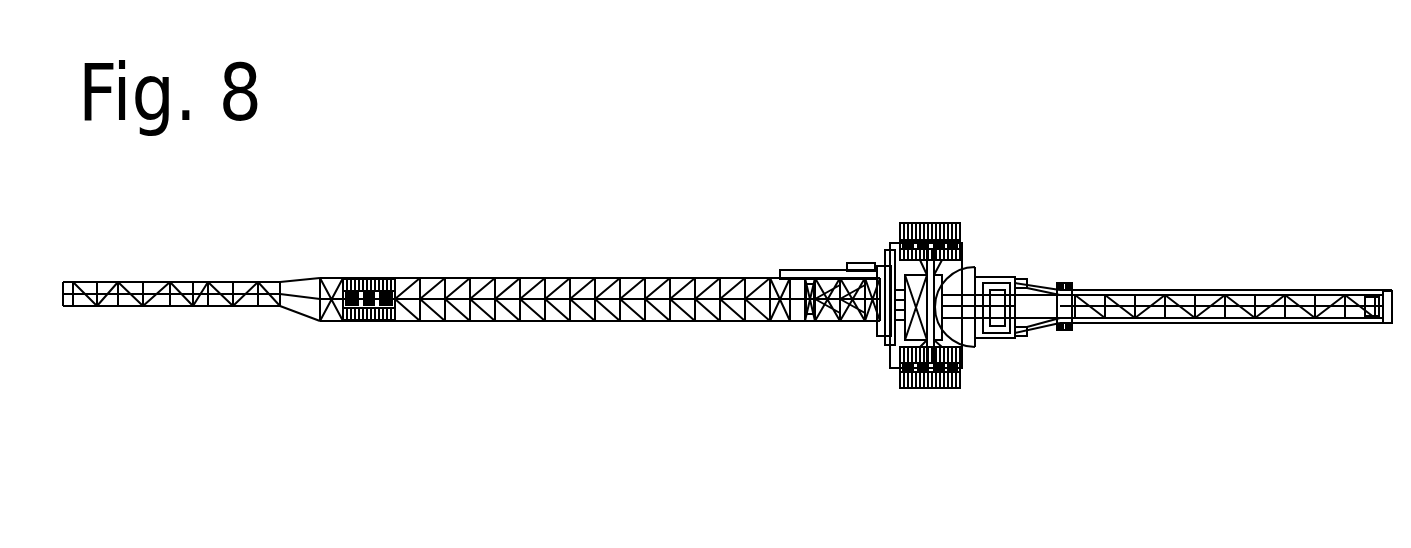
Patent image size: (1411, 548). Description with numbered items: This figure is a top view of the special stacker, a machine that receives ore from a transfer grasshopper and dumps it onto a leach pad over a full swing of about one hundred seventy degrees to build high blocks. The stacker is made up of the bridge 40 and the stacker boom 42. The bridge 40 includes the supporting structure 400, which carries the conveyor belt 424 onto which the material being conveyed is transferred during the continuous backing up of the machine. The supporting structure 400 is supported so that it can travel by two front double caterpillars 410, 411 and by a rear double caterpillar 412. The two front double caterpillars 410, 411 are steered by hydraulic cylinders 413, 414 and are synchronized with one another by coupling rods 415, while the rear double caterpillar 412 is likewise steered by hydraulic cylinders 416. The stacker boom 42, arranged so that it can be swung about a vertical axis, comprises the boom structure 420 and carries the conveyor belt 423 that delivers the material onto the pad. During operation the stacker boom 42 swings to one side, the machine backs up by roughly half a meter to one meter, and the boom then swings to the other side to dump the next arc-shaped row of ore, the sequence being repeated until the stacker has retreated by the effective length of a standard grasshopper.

The bridge 40 is at (612, 280).
The supporting structure 400 is at (474, 322).
The rear double caterpillar 412 is at (375, 322).
The hydraulic cylinders 416 is at (382, 278).
The coupling rods 415 is at (883, 250).
The hydraulic cylinder 413 is at (945, 224).
The hydraulic cylinder 414 is at (940, 388).
The front double caterpillar 410 is at (962, 226).
The front double caterpillar 411 is at (962, 388).
The stacker boom 42 is at (1185, 290).
The boom structure 420 is at (1260, 323).
The conveyor belt 423 is at (1340, 300).
The conveyor belt 424 is at (1152, 323).